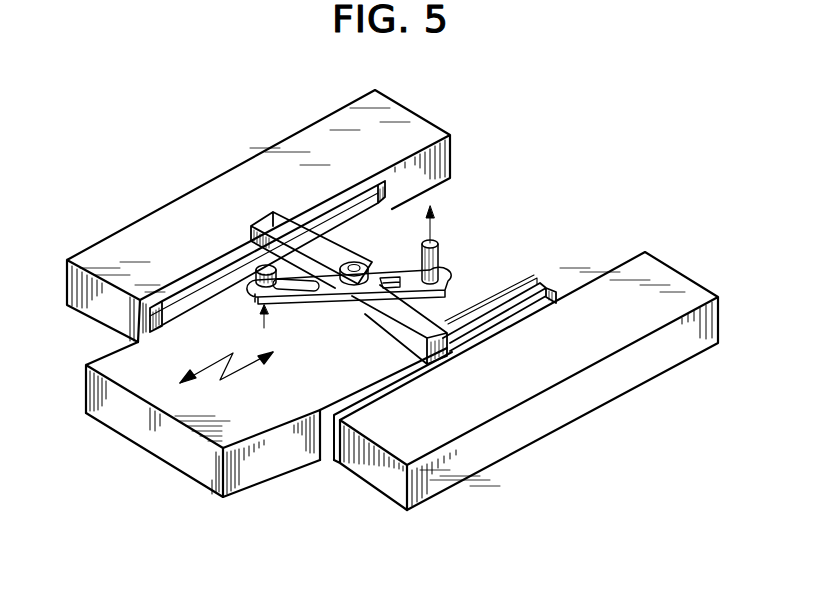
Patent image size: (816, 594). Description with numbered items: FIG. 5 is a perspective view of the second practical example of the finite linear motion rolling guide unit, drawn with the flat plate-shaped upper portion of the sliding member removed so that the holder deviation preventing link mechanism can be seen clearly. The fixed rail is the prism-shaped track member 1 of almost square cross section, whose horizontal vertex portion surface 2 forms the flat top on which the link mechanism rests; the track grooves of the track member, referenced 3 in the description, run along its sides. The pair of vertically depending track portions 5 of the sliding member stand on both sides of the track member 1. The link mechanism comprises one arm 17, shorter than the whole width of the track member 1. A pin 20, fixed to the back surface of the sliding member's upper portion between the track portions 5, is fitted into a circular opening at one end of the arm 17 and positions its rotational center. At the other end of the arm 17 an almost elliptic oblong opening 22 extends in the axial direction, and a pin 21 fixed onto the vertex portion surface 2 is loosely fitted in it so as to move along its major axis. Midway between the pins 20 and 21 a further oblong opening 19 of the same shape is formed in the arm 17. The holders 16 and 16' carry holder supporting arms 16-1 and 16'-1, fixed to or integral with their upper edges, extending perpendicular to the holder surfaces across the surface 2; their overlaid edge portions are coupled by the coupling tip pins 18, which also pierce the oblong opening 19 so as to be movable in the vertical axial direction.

The track member 1 is at (76, 426).
The horizontal vertex portion surface 2 is at (100, 363).
The second base part 3 is at (291, 446).
The vertically depending track portion 5 is at (424, 124).
The holder 16 is at (515, 297).
The holder 16' is at (290, 247).
The holder supporting arm 16-1 is at (378, 316).
The holder supporting arm 16'-1 is at (297, 236).
The arm 17 is at (411, 272).
The coupling tip pin 18 is at (359, 263).
The oblong opening 19 is at (430, 286).
The pin 20 is at (440, 262).
The pin 21 is at (252, 283).
The oblong opening 22 is at (303, 296).